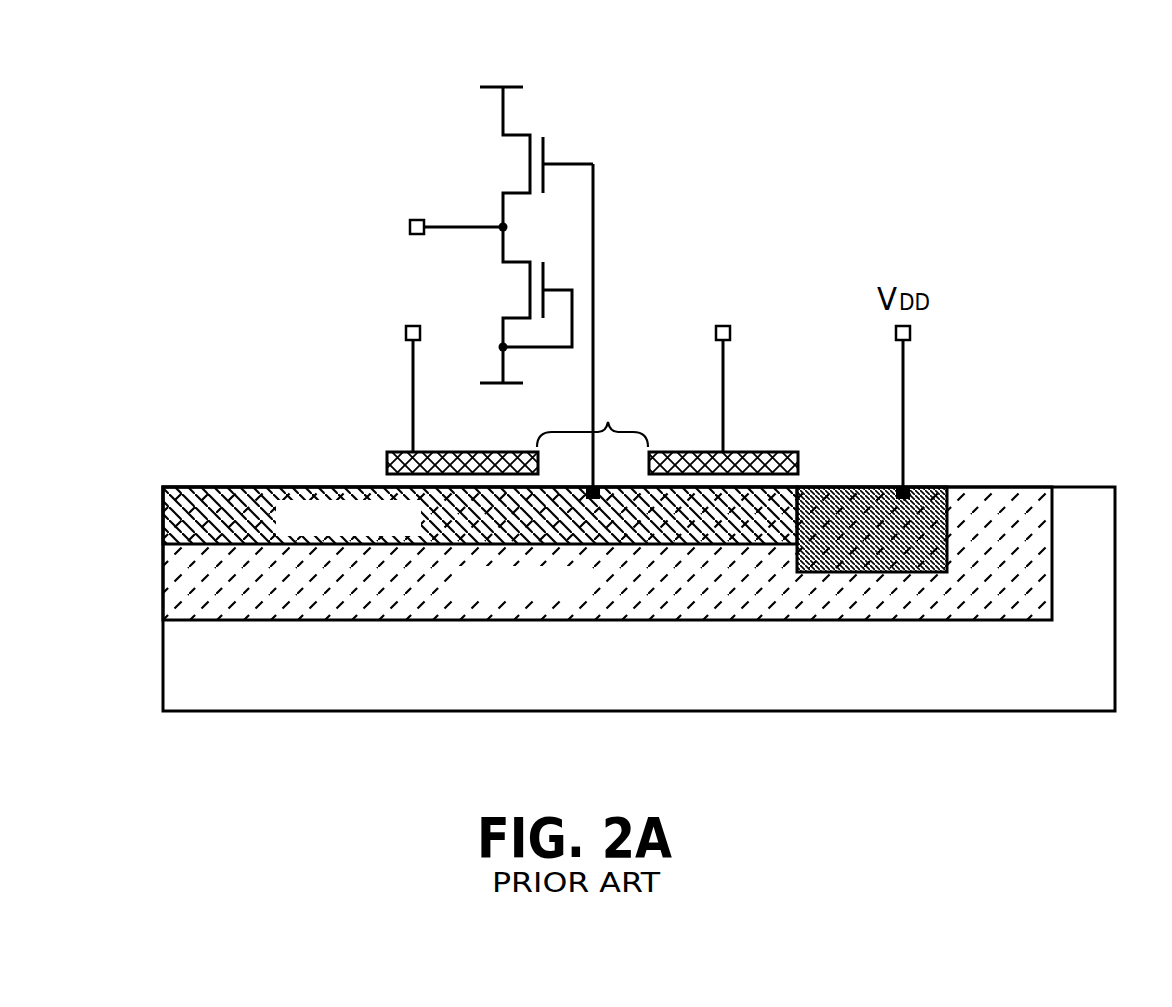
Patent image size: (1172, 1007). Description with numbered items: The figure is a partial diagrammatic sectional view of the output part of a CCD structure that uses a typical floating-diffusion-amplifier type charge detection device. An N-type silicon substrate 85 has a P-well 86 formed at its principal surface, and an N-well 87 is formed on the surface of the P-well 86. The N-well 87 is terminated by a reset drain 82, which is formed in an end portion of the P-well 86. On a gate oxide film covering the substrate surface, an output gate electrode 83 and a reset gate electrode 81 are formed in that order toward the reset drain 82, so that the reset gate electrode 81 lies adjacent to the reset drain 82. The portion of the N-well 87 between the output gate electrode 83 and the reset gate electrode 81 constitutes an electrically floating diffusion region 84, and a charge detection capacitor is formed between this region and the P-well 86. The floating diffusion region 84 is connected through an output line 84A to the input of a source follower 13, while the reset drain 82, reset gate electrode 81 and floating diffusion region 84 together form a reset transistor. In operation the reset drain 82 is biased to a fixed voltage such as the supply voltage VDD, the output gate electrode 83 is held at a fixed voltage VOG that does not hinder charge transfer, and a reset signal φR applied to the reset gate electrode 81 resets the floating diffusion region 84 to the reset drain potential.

The source follower 13 is at (533, 132).
The reset gate electrode 81 is at (755, 452).
The reset drain 82 is at (917, 495).
The output gate electrode 83 is at (393, 452).
The floating diffusion region 84 is at (608, 422).
The output line 84A is at (594, 278).
The N-type silicon substrate 85 is at (1075, 508).
The P-well 86 is at (986, 507).
The N-well 87 is at (200, 497).